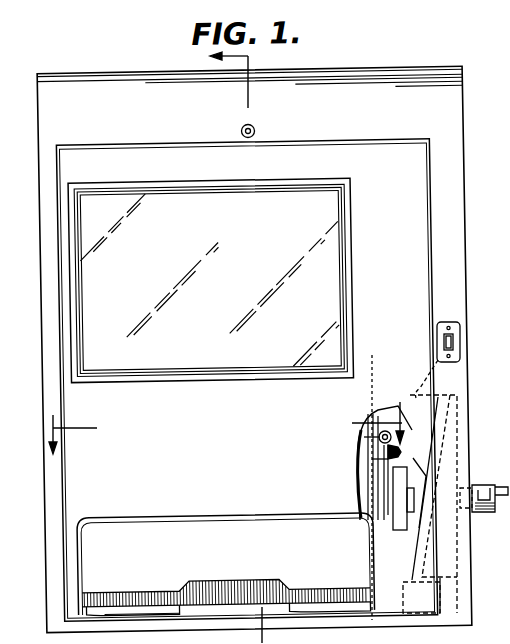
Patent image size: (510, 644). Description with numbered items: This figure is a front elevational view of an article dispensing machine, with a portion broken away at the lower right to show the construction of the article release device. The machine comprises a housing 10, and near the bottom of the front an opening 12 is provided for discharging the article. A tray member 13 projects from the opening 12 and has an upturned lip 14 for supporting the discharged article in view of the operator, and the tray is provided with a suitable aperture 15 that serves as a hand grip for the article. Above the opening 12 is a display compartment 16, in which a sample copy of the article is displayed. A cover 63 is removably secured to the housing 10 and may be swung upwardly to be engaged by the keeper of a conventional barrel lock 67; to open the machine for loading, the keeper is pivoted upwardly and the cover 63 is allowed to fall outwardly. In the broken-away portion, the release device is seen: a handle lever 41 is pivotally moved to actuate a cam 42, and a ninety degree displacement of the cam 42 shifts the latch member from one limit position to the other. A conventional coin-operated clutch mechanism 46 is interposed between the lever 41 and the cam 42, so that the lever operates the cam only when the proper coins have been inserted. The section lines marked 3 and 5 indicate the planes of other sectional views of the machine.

The housing 10 is at (82, 83).
The section line 3- 3 is at (253, 346).
The section line 5- 5 is at (224, 418).
The cover 63 is at (388, 140).
The barrel lock 67 is at (242, 129).
The display compartment 16 is at (330, 281).
The cam 42 is at (395, 513).
The coin-operated clutch mechanism 46 is at (456, 440).
The handle lever 41 is at (487, 486).
The tray member 13 is at (333, 617).
The opening 12 is at (221, 592).
The upturned lip 14 is at (117, 607).
The aperture 15 is at (187, 616).